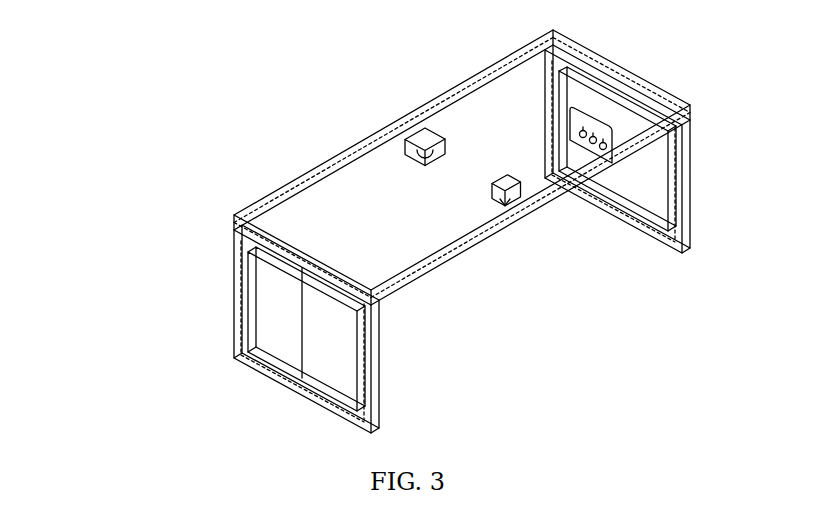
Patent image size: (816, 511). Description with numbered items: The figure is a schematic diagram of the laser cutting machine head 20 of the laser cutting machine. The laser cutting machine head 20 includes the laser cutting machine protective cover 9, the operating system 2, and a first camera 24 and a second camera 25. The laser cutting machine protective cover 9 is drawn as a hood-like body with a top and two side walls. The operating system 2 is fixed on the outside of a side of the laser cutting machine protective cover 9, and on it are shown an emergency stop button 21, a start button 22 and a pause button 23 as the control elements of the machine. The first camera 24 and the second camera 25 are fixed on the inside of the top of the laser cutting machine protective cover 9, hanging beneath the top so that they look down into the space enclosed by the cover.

The laser cutting machine head 20 is at (553, 43).
The laser cutting machine protective cover 9 is at (287, 319).
The operating system 2 is at (583, 118).
The emergency stop button 21 is at (584, 138).
The start button 22 is at (594, 144).
The pause button 23 is at (605, 150).
The first camera 24 is at (504, 206).
The second camera 25 is at (424, 162).